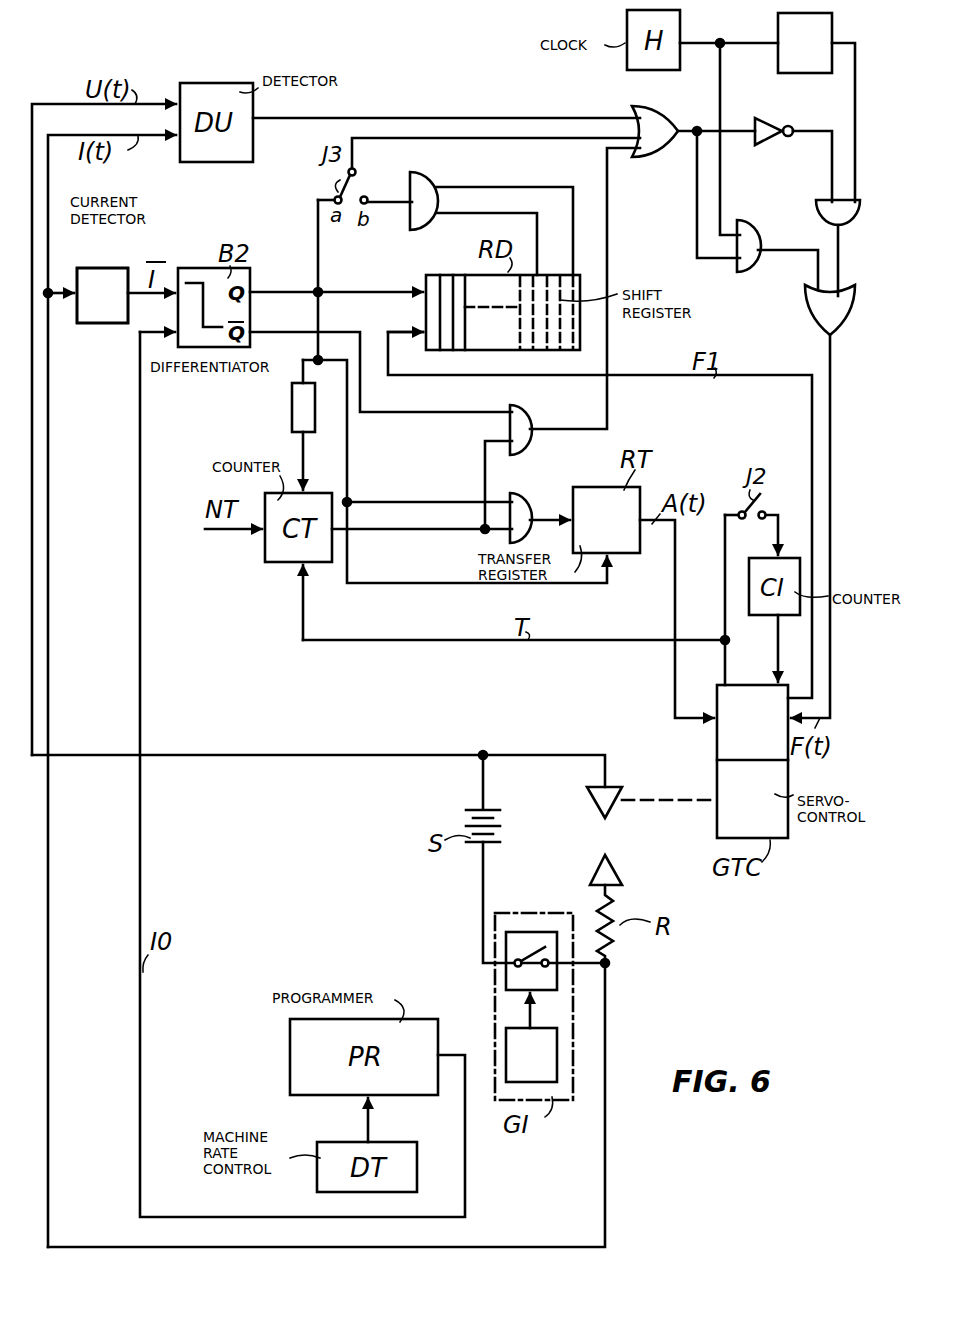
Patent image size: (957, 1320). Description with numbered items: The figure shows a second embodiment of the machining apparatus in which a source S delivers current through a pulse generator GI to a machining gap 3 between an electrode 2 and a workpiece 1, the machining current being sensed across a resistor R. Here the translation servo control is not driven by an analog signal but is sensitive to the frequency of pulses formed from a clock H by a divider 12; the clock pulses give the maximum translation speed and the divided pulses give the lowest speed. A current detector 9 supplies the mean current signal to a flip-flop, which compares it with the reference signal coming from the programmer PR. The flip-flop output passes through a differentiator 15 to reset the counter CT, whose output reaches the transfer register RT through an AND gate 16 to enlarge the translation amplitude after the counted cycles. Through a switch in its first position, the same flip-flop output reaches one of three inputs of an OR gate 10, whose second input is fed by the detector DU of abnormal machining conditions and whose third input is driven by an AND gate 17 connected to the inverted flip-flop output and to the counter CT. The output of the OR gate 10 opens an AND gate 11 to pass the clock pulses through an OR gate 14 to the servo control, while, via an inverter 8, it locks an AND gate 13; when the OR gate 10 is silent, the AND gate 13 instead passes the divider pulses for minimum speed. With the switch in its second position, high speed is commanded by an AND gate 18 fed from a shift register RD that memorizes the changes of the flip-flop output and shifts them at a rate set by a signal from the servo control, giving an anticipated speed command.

The workpiece 1 is at (588, 797).
The electrode 2 is at (592, 867).
The machining gap 3 is at (612, 840).
The inverter 8 is at (768, 100).
The current detector 9 is at (112, 266).
The OR gate 10 is at (660, 153).
The AND gate 11 is at (750, 232).
The divider 12 is at (778, 26).
The AND gate 13 is at (816, 205).
The OR gate 14 is at (816, 318).
The differentiator 15 is at (288, 408).
The AND gate 16 is at (518, 496).
The AND gate 17 is at (530, 410).
The AND gate 18 is at (424, 178).